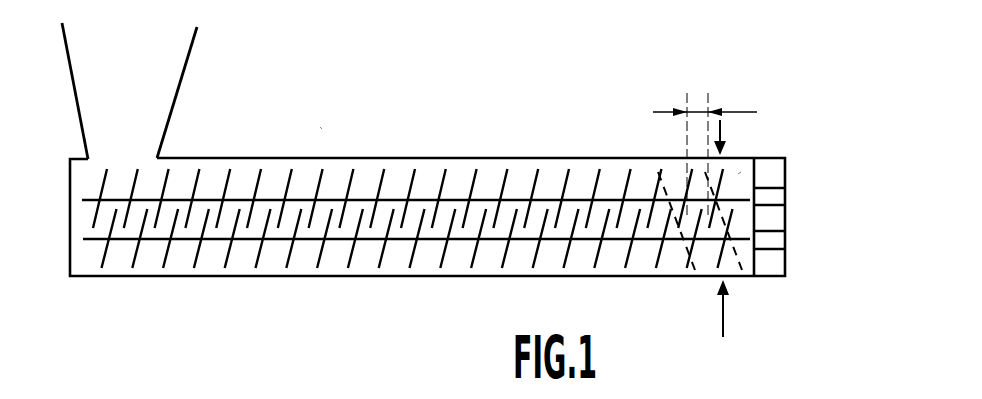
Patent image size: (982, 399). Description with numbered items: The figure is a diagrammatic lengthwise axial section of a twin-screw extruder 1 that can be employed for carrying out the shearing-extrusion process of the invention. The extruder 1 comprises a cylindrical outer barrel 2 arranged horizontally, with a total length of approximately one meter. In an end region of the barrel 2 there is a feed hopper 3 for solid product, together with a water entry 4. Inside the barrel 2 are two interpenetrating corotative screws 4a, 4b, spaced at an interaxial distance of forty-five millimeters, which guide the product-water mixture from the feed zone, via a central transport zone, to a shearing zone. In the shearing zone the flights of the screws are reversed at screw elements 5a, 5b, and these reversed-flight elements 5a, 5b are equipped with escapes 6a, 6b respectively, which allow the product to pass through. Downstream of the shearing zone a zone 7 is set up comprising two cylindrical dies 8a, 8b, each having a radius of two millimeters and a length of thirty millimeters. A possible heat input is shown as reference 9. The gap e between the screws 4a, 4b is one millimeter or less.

The extruder 1 is at (321, 122).
The cylindrical outer barrel 2 is at (251, 150).
The feed hopper 3 is at (139, 102).
The water entry 4 is at (227, 289).
The corotative screw 4a is at (425, 199).
The corotative screw 4b is at (435, 240).
The screw element with reversed flights 5a is at (740, 168).
The screw element with reversed flights 5b is at (685, 270).
The escape 6a is at (670, 170).
The escape 6b is at (738, 256).
The zone 7 is at (773, 166).
The cylindrical die 8a is at (775, 198).
The cylindrical die 8b is at (773, 238).
The heat input 9 is at (728, 233).
The gap e is at (705, 147).